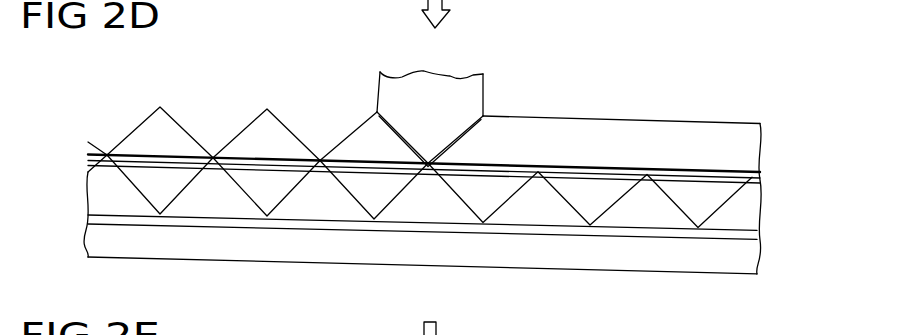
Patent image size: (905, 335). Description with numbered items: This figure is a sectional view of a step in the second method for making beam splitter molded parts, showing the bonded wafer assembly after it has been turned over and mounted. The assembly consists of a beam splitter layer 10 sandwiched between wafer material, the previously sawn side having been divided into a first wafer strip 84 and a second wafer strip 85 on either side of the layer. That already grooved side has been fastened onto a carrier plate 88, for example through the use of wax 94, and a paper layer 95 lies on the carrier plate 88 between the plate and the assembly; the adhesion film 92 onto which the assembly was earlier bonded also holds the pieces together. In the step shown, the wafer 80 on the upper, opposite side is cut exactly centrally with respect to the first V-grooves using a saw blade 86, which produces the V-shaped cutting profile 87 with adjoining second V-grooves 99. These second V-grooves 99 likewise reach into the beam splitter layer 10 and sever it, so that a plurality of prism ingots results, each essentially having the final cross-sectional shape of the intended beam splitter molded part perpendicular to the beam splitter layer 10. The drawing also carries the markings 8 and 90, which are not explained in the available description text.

The substrate layer 8 is at (128, 203).
The beam splitter layer 10 is at (693, 170).
The wafer 80 is at (737, 143).
The first wafer strip 84 is at (163, 195).
The second wafer strip 85 is at (190, 138).
The saw blade 86 is at (478, 95).
The V-shaped cutting profile 87 is at (438, 134).
The carrier plate 88 is at (743, 267).
The prism ridge 90 is at (174, 104).
The adhesion film 92 is at (720, 0).
The wax 94 is at (110, 195).
The paper layer 95 is at (758, 236).
The second V-grooves 99 is at (103, 128).